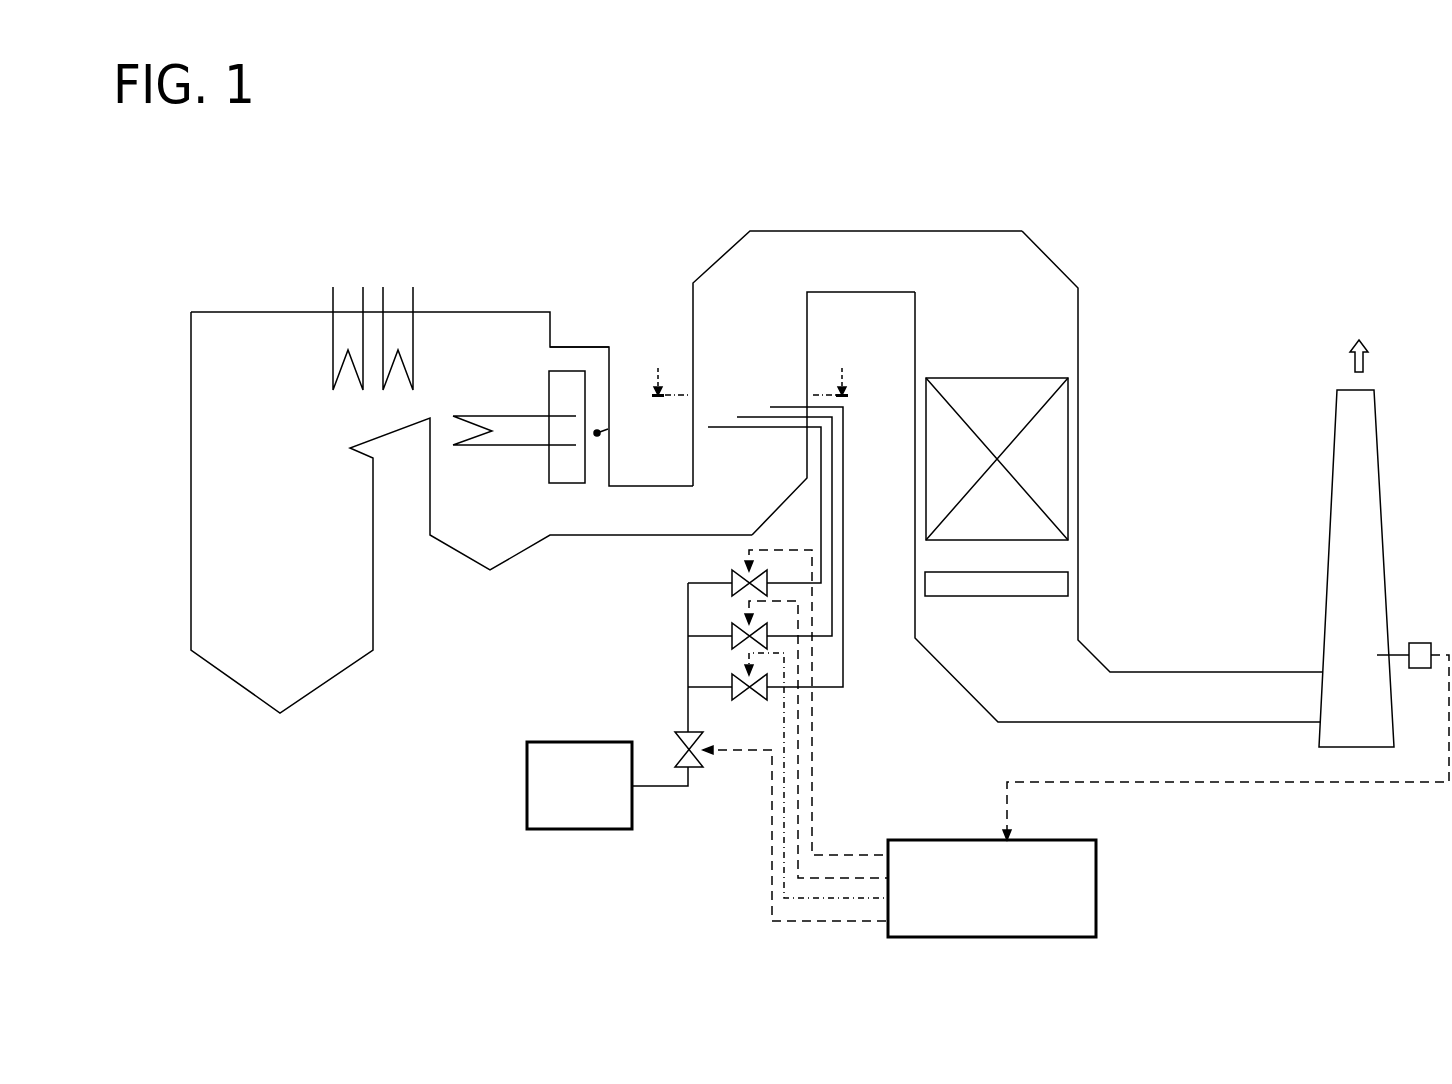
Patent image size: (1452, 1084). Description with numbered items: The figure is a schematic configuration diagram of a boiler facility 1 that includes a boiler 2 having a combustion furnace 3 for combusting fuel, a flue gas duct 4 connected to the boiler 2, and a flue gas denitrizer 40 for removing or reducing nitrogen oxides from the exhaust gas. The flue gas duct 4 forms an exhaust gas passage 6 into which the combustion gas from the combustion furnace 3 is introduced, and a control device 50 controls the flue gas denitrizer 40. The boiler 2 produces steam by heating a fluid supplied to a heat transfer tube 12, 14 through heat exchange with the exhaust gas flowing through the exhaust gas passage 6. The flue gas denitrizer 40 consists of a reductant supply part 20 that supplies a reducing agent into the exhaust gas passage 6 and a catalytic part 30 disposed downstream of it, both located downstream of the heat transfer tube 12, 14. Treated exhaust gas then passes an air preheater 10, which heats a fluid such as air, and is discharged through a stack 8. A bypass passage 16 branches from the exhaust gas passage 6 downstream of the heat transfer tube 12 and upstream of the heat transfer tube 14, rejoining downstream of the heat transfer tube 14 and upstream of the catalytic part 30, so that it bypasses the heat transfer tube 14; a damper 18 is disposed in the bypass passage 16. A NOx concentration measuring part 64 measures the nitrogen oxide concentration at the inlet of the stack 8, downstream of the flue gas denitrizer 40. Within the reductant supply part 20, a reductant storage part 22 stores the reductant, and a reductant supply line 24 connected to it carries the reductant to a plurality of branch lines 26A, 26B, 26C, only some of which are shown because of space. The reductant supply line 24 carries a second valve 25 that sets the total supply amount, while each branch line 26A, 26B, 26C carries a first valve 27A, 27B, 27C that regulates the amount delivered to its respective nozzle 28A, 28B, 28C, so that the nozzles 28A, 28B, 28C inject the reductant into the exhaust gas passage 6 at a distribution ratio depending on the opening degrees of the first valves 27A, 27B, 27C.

The boiler facility 1 is at (1347, 180).
The boiler 2 is at (187, 245).
The combustion furnace 3 is at (191, 513).
The flue gas duct 4 is at (960, 231).
The exhaust gas passage 6 is at (1050, 325).
The stack 8 is at (1378, 535).
The air preheater 10 is at (1068, 582).
The heat transfer tube 12 is at (333, 296).
The heat transfer tube 14 is at (568, 483).
The bypass passage 16 is at (580, 347).
The damper 18 is at (594, 431).
The reductant supply part 20 is at (508, 847).
The reductant storage part 22 is at (577, 742).
The reductant supply line 24 is at (688, 713).
The second valve 25 is at (693, 768).
The branch line 26A is at (843, 520).
The branch line 26B is at (833, 478).
The branch line 26C is at (822, 437).
The first valve 27A is at (732, 682).
The first valve 27B is at (732, 628).
The first valve 27C is at (732, 575).
The nozzle 28A is at (777, 405).
The nozzle 28B is at (745, 415).
The nozzle 28C is at (715, 425).
The catalytic part 30 is at (1057, 452).
The flue gas denitrizer 40 is at (1143, 370).
The control device 50 is at (1096, 885).
The NOx concentration measuring part 64 is at (1418, 643).